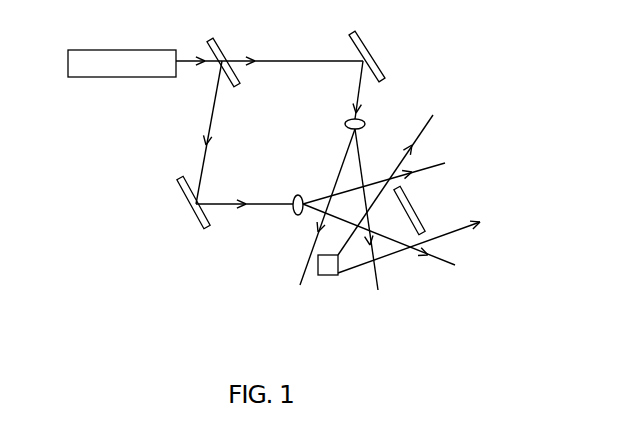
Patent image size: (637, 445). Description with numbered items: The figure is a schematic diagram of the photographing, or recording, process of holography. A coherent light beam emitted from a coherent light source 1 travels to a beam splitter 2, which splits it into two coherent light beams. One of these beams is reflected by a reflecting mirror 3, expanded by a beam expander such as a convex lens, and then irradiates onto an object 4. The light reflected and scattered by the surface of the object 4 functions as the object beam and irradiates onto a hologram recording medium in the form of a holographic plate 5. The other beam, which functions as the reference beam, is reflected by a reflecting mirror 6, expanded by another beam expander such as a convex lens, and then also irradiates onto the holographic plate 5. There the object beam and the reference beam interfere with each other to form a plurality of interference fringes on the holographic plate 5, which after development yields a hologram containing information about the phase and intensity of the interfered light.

The coherent light source 1 is at (87, 57).
The beam splitter 2 is at (217, 43).
The reflecting mirror 3 is at (365, 43).
The object 4 is at (327, 275).
The holographic plate 5 is at (413, 207).
The reflecting mirror 6 is at (177, 180).